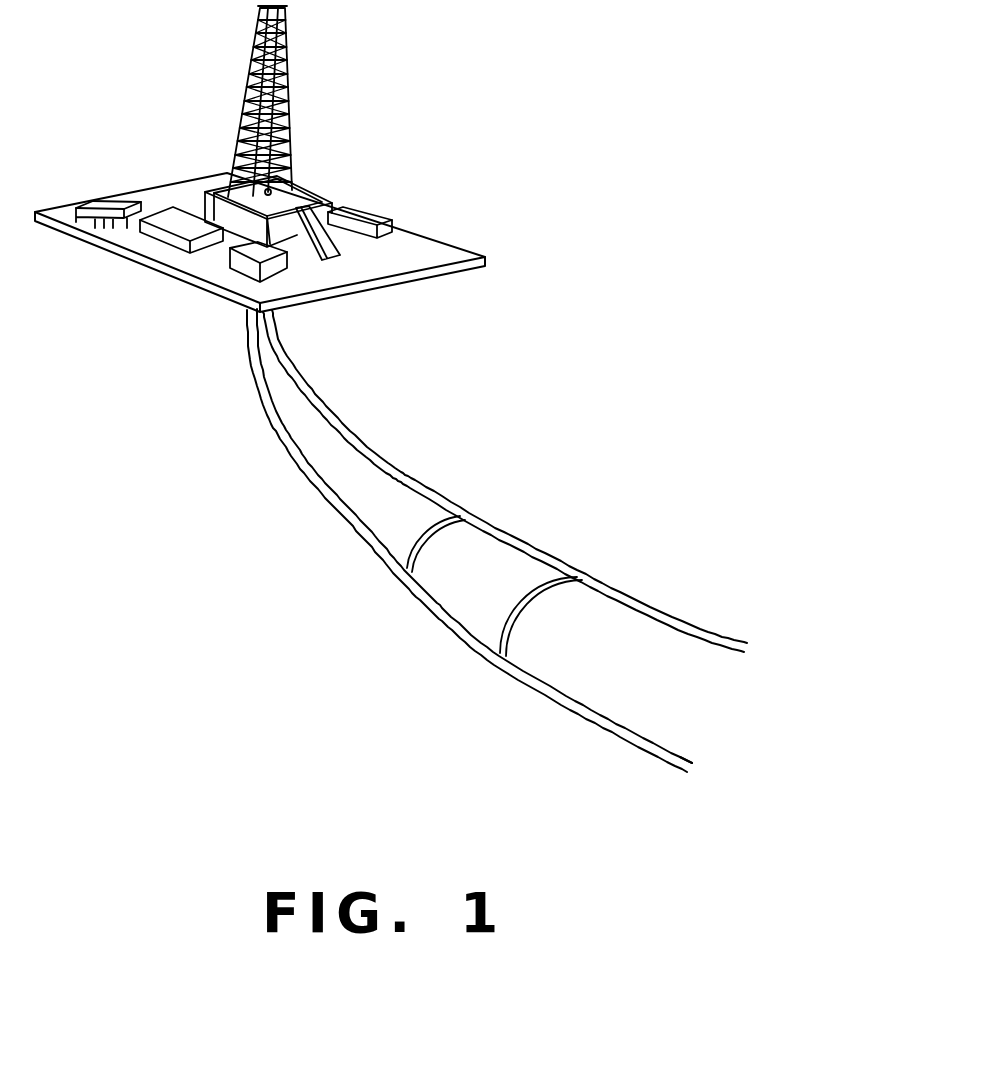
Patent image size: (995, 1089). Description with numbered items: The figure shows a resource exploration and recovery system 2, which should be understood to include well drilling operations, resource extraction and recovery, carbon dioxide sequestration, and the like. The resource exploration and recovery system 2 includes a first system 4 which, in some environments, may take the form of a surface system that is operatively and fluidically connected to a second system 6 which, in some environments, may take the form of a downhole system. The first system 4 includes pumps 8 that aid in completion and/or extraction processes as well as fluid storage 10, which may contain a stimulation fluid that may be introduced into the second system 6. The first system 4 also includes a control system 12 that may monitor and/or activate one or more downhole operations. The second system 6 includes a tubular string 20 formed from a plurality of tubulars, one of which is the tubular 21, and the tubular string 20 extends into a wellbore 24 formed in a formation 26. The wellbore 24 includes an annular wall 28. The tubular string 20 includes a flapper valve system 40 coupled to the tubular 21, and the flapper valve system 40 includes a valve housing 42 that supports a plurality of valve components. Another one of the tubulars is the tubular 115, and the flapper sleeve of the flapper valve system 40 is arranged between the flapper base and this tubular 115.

The resource exploration and recovery system 2 is at (587, 91).
The first system 4 is at (160, 77).
The second system 6 is at (279, 666).
The pumps 8 is at (161, 186).
The fluid storage 10 is at (358, 190).
The control system 12 is at (290, 289).
The tubular string 20 is at (170, 391).
The tubular 21 is at (310, 445).
The wellbore 24 is at (690, 766).
The formation 26 is at (211, 551).
The annular wall 28 is at (702, 638).
The flapper valve system 40 is at (444, 635).
The valve housing 42 is at (508, 530).
The tubular 115 is at (557, 653).